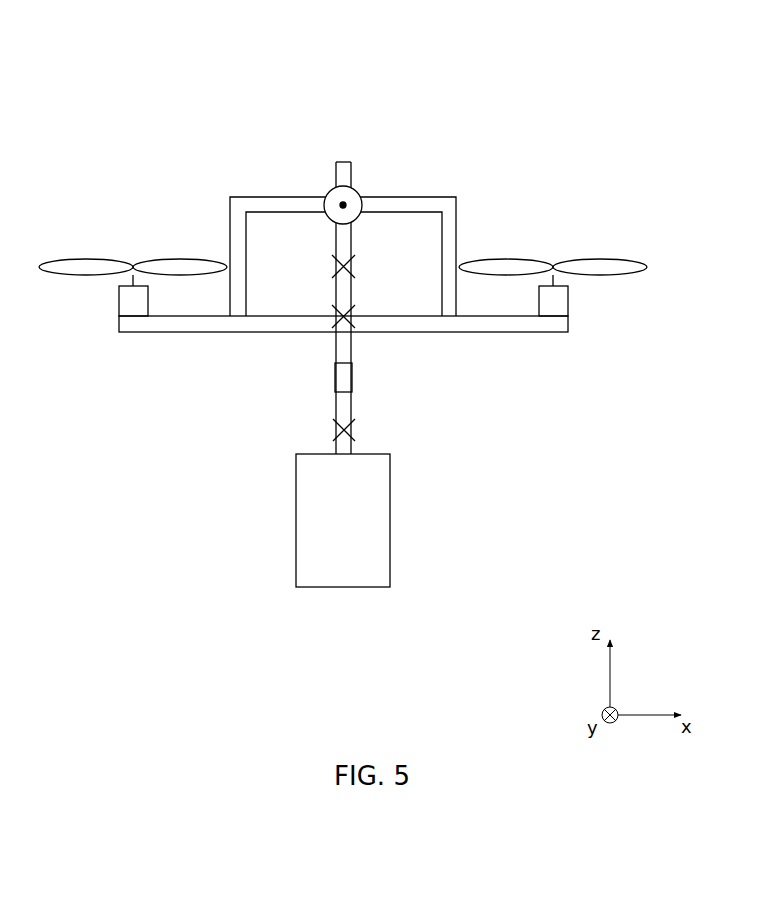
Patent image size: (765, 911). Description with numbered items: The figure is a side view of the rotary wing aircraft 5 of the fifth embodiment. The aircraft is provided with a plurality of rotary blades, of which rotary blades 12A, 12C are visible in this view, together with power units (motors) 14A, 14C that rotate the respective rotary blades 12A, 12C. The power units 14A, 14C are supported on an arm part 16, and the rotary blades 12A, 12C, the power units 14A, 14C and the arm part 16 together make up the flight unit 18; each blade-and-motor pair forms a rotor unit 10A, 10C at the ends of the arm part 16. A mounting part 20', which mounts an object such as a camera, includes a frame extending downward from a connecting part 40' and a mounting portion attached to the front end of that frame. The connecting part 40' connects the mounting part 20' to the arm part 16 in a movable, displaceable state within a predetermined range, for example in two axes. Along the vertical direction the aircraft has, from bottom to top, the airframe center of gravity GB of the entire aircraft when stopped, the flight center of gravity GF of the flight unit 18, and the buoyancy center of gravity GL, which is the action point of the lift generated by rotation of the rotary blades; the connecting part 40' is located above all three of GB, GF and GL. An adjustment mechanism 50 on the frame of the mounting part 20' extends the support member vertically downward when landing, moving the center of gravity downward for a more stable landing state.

The rotary wing aircraft 5 is at (358, 83).
The rotor unit 10A is at (127, 256).
The rotor unit 10C is at (563, 260).
The rotary blade 12A is at (98, 259).
The rotary blade 12C is at (593, 259).
The power unit (motor) 14A is at (118, 302).
The power unit (motor) 14C is at (568, 303).
The arm part 16 is at (520, 334).
The flight unit 18 is at (458, 190).
The mounting part 20' is at (390, 520).
The connecting part 40' is at (386, 301).
The adjustment mechanism 50 is at (352, 378).
The buoyancy center of gravity GL is at (360, 265).
The flight center of gravity GF is at (362, 310).
The airframe center of gravity GB is at (365, 425).